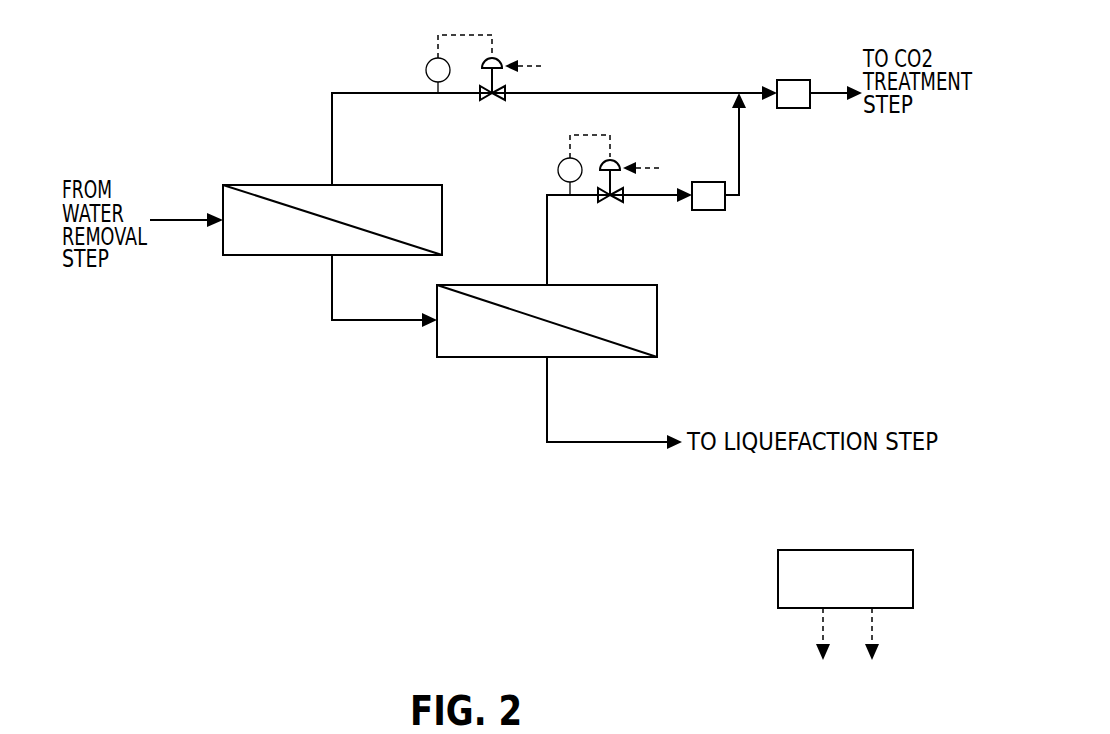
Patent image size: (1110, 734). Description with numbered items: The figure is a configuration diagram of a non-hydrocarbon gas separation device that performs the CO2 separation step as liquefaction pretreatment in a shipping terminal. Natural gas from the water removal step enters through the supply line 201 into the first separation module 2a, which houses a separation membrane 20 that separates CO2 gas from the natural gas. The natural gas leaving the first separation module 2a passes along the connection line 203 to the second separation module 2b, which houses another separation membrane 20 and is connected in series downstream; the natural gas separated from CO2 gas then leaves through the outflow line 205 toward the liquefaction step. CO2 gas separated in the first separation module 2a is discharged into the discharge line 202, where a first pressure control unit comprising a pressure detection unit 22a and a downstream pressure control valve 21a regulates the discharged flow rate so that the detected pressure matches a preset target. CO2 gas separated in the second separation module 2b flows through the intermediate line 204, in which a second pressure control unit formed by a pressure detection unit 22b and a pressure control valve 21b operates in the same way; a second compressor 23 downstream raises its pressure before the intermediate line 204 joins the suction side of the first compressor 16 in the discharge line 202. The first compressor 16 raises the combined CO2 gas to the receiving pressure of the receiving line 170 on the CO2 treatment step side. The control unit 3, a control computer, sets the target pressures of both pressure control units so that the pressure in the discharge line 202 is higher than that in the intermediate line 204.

The first separation module 2a is at (270, 183).
The second separation module 2b is at (483, 284).
The separation membrane 20 is at (367, 227).
The control unit 3 is at (848, 550).
The first compressor 16 is at (797, 79).
The receiving line 170 is at (818, 95).
The supply line 201 is at (197, 218).
The discharge line 202 is at (660, 74).
The connection line 203 is at (382, 321).
The intermediate line 204 is at (546, 218).
The outflow line 205 is at (592, 443).
The pressure control valve 21a is at (503, 60).
The pressure control valve 21b is at (620, 160).
The pressure detection unit 22a is at (425, 60).
The pressure detection unit 22b is at (558, 160).
The second compressor 23 is at (707, 211).